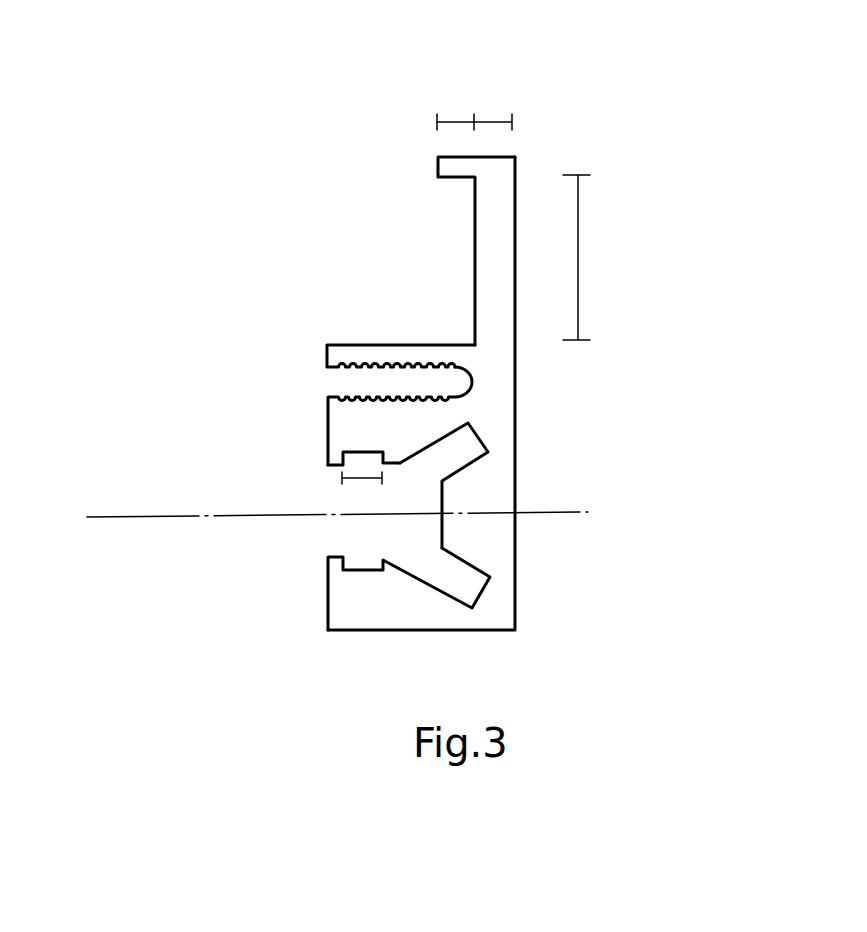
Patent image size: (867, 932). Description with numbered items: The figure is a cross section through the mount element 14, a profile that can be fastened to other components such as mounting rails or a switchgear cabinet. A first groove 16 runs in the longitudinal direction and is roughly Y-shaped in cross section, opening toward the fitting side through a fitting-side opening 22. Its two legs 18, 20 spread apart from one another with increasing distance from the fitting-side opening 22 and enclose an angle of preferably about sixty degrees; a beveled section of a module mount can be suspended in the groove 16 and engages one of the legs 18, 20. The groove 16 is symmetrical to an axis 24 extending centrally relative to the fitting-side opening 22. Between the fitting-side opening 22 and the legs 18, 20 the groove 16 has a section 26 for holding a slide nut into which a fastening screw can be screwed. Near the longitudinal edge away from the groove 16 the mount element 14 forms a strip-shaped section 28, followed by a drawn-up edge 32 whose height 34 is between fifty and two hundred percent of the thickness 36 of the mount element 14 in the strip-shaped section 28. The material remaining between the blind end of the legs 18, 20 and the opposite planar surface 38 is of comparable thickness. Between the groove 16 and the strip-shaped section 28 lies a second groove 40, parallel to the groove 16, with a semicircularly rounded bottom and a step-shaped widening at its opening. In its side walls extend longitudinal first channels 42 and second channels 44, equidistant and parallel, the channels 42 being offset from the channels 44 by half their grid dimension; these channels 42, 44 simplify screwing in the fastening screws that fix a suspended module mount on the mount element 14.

The mount element 14 is at (318, 707).
The first groove 16 is at (447, 527).
The leg 18 is at (470, 582).
The leg 20 is at (460, 447).
The fitting-side opening 22 is at (332, 543).
The axis 24 is at (145, 518).
The section for holding a slide nut 26 is at (333, 466).
The strip-shaped section 28 is at (580, 266).
The drawn-up edge 32 is at (453, 181).
The height 34 is at (460, 120).
The thickness 36 is at (489, 120).
The planar surface 38 is at (522, 432).
The second groove 40 is at (378, 384).
The first channels 42 is at (343, 397).
The second channels 44 is at (348, 368).